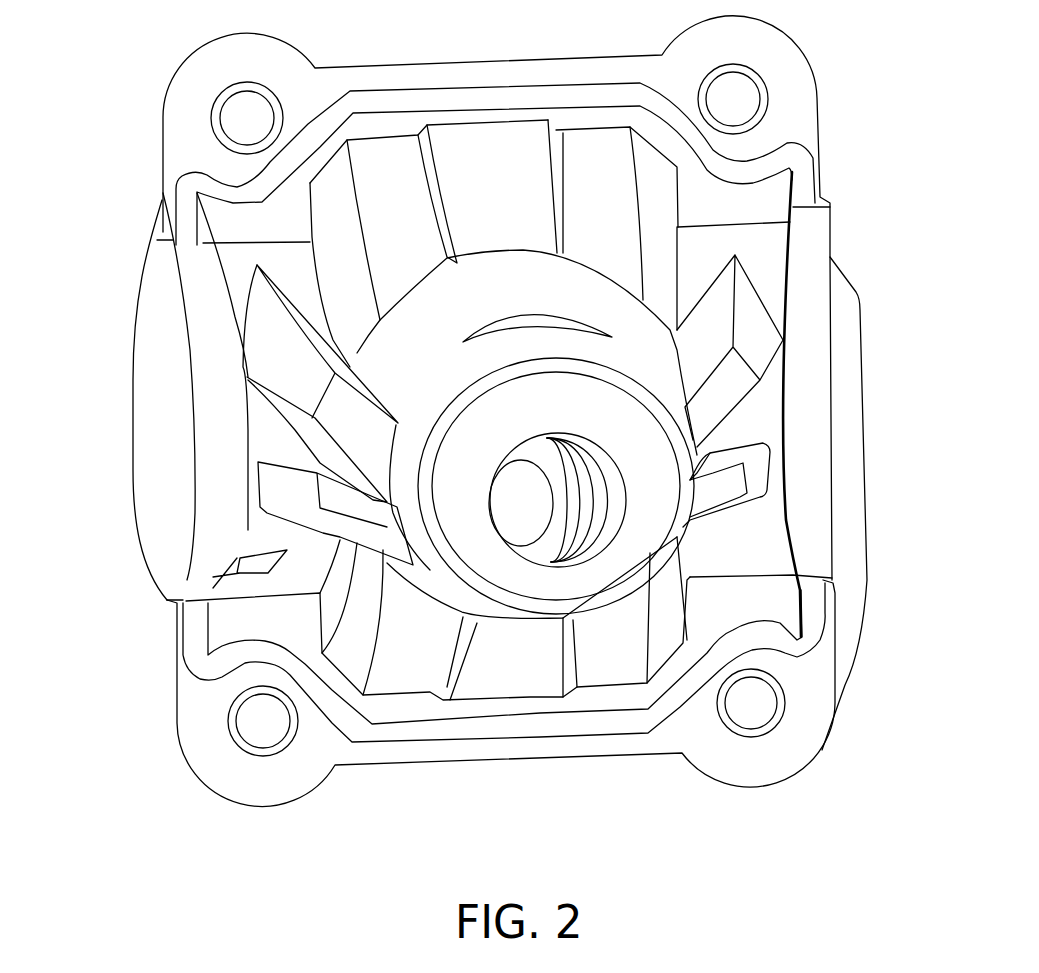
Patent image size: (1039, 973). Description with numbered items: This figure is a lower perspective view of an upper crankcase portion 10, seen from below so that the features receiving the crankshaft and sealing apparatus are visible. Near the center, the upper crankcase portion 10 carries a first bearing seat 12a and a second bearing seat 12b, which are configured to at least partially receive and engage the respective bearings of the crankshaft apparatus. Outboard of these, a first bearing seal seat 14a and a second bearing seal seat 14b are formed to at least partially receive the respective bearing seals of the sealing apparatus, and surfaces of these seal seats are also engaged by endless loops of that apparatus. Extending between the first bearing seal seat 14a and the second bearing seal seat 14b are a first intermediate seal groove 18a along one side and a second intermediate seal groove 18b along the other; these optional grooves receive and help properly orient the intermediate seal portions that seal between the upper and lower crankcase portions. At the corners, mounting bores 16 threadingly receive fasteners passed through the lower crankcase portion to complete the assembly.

The upper crankcase portion 10 is at (112, 300).
The first bearing seat 12a is at (767, 537).
The second bearing seat 12b is at (262, 530).
The first bearing seal seat 14a is at (817, 447).
The second bearing seal seat 14b is at (200, 447).
The mounting bores 16 is at (773, 727).
The first intermediate seal groove 18a is at (528, 70).
The second intermediate seal groove 18b is at (568, 740).